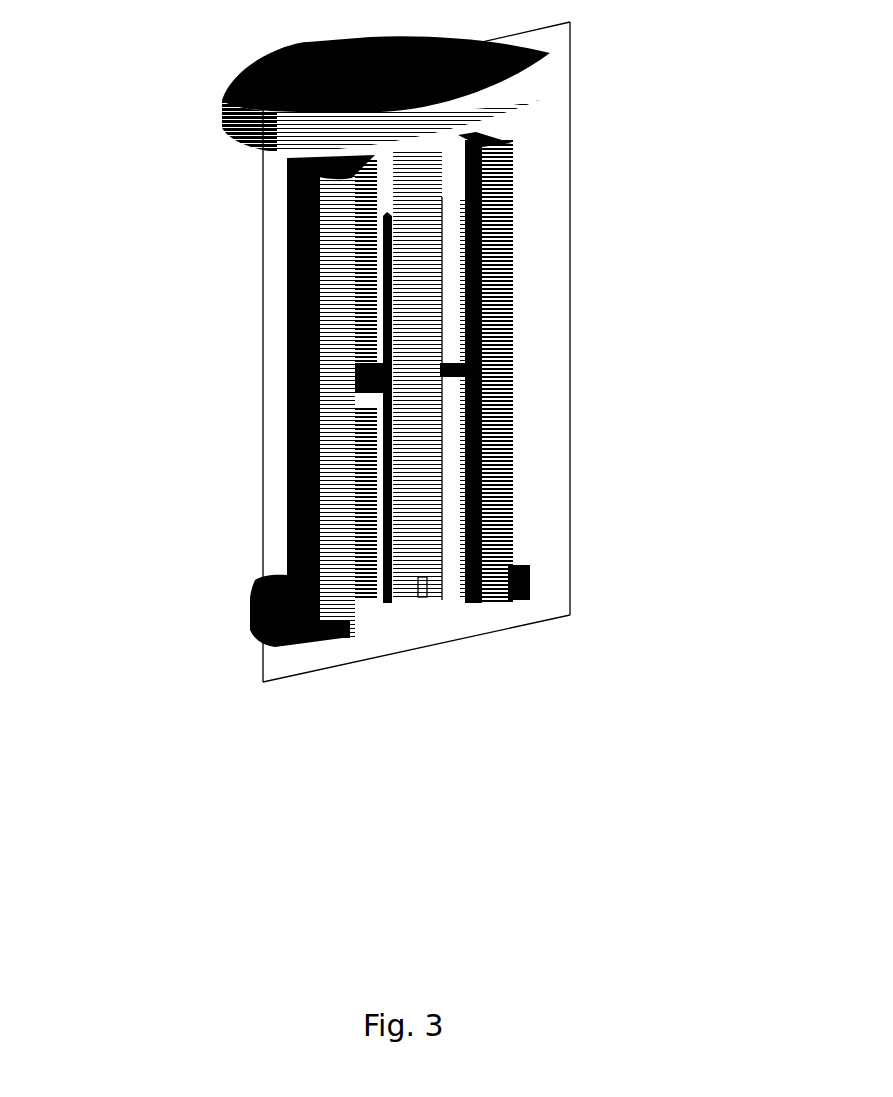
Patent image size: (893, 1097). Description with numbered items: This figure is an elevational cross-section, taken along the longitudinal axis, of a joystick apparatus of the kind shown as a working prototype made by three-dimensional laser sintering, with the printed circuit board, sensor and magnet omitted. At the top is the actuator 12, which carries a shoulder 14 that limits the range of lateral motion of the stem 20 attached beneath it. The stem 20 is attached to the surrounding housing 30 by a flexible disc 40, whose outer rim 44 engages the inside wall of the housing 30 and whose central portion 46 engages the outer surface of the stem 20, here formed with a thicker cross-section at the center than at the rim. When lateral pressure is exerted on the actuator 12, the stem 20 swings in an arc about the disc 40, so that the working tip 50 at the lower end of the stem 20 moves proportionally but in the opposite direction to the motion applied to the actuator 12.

The actuator 12 is at (536, 87).
The shoulder 14 is at (362, 188).
The stem 20 is at (415, 285).
The housing 30 is at (510, 203).
The flexible disc 40 is at (455, 383).
The rim 44 is at (478, 368).
The central portion 46 is at (357, 385).
The working tip 50 is at (413, 590).